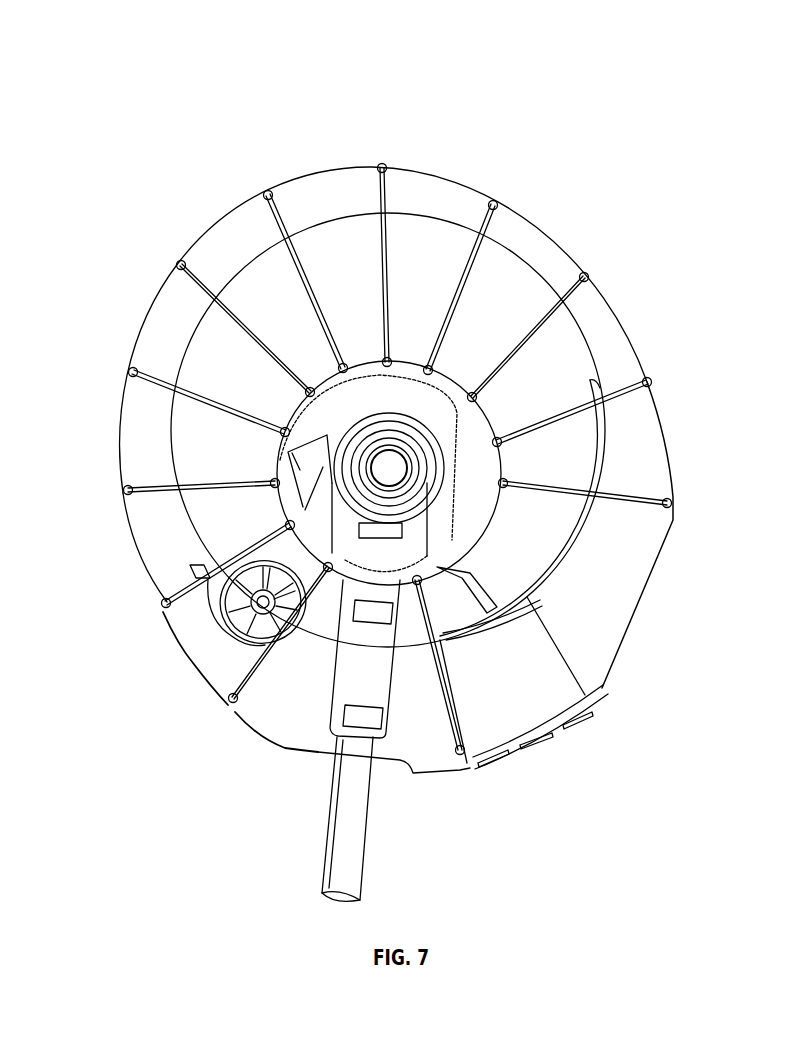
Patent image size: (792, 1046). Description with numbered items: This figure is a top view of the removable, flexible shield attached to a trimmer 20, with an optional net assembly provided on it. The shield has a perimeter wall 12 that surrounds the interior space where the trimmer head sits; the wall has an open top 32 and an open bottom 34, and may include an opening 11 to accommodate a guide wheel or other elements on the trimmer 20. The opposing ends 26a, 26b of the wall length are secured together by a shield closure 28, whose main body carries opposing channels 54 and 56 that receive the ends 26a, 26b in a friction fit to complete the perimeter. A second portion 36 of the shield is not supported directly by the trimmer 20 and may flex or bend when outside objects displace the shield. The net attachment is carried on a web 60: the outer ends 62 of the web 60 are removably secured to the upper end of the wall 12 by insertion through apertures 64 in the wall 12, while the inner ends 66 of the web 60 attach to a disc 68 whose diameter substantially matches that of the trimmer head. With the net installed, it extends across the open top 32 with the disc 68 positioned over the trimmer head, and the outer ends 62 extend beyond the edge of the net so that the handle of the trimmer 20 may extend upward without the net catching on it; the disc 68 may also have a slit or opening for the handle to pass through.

The opening 11 is at (193, 572).
The perimeter wall 12 is at (650, 580).
The trimmer 20 is at (378, 832).
The end of the shield length 26a is at (497, 767).
The end of the shield length 26b is at (603, 693).
The shield closure 28 is at (574, 743).
The open top 32 is at (420, 232).
The bottom 34 is at (493, 283).
The second portion 36 is at (285, 158).
The channel 54 is at (471, 775).
The channel 56 is at (588, 712).
The web 60 is at (234, 272).
The outer end of the web 62 is at (128, 373).
The aperture 64 is at (132, 488).
The inner end of the web 66 is at (324, 353).
The disc 68 is at (292, 397).